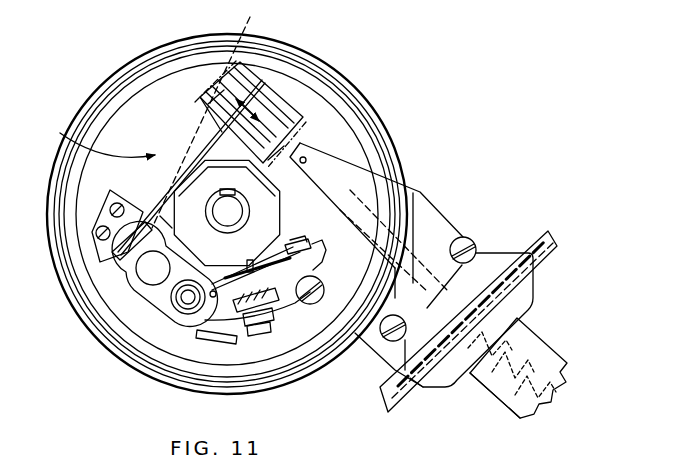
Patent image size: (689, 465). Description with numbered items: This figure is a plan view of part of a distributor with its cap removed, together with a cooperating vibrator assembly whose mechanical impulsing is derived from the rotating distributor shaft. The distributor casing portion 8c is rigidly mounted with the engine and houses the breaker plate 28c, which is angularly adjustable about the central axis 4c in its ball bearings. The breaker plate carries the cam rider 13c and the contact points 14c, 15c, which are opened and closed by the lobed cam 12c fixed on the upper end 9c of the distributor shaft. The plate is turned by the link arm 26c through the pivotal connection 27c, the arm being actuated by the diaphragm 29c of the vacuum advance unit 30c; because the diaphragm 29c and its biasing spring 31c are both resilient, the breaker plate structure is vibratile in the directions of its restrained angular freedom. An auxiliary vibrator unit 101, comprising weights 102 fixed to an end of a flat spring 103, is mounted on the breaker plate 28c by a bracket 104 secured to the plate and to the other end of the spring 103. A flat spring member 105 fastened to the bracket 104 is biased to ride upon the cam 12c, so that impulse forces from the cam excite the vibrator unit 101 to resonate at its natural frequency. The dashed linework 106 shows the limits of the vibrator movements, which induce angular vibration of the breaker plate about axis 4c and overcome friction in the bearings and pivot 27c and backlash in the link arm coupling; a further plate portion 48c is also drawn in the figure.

The distributor casing portion 8c is at (345, 78).
The lobed cam 12c is at (244, 258).
The upper end of distributor shaft 9c is at (252, 216).
The central axis 4c is at (229, 211).
The weights 102 is at (276, 76).
The breaker plate 28c is at (168, 146).
The dashed linework 106 is at (166, 174).
The flat spring 103 is at (214, 131).
The auxiliary vibrator unit 101 is at (56, 141).
The bracket 104 is at (115, 195).
The flat spring member 105 is at (170, 218).
The cam rider 13c is at (182, 318).
The contact point 14c is at (312, 236).
The contact point 15c is at (327, 243).
The pivotal connection 27c is at (333, 182).
The link arm 26c is at (380, 168).
The vacuum advance unit 30c is at (520, 300).
The diaphragm 29c is at (535, 268).
The spring plate 48c is at (543, 352).
The biasing spring 31c is at (490, 390).